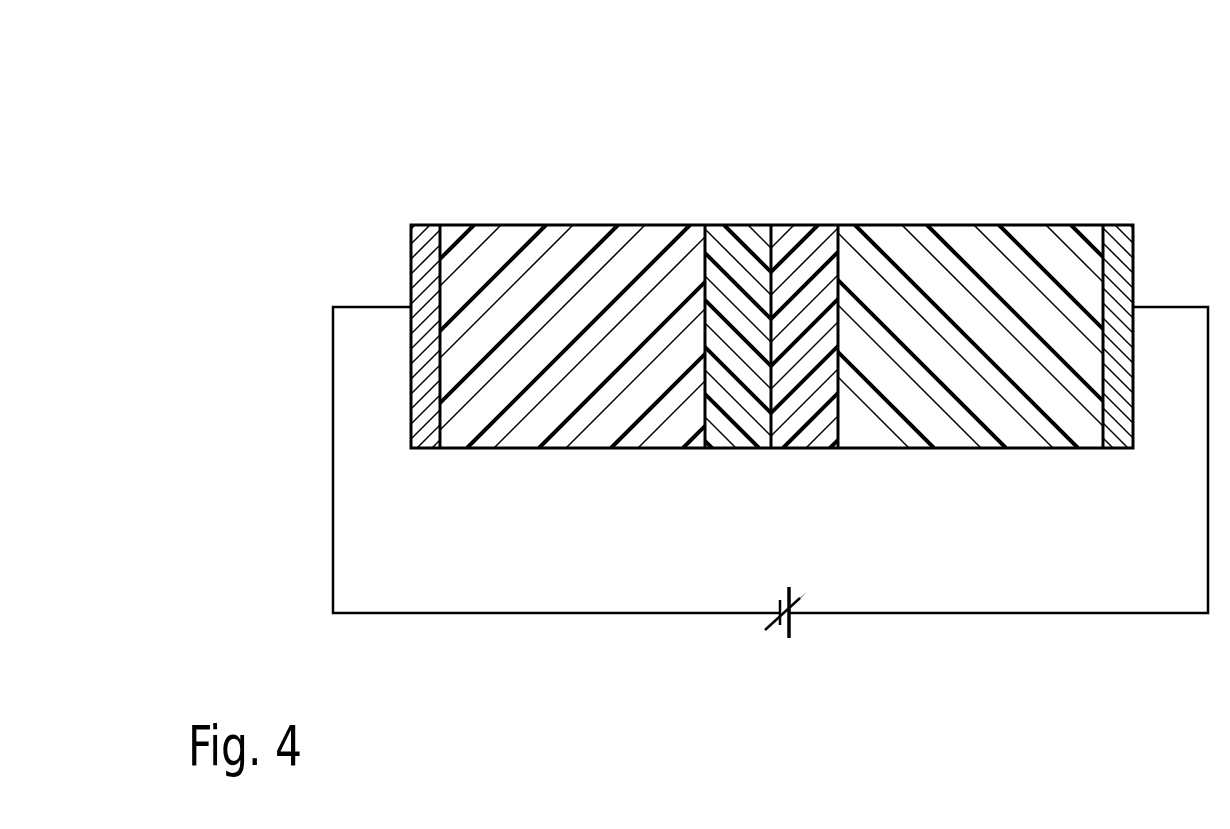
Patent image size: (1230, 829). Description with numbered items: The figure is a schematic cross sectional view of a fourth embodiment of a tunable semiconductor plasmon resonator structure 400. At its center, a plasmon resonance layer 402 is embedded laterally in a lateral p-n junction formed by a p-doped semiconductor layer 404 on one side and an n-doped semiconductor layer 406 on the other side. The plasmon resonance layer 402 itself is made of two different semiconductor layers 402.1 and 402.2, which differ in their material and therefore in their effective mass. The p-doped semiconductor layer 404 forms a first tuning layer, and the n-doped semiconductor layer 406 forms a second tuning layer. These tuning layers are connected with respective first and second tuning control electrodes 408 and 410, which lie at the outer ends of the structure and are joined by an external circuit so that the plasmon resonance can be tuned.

The tunable semiconductor plasmon resonator structure 400 is at (402, 88).
The plasmon resonance layer 402 is at (771, 314).
The semiconductor layer 402.1 is at (733, 450).
The semiconductor layer 402.2 is at (803, 450).
The p-doped semiconductor layer 404 is at (523, 250).
The n-doped semiconductor layer 406 is at (1021, 248).
The first tuning control electrode 408 is at (420, 272).
The second tuning control electrode 410 is at (1127, 275).